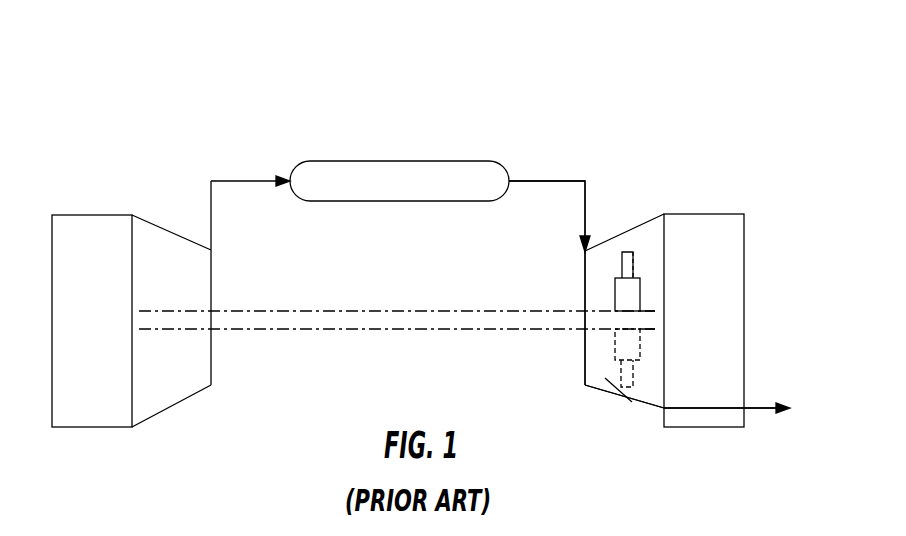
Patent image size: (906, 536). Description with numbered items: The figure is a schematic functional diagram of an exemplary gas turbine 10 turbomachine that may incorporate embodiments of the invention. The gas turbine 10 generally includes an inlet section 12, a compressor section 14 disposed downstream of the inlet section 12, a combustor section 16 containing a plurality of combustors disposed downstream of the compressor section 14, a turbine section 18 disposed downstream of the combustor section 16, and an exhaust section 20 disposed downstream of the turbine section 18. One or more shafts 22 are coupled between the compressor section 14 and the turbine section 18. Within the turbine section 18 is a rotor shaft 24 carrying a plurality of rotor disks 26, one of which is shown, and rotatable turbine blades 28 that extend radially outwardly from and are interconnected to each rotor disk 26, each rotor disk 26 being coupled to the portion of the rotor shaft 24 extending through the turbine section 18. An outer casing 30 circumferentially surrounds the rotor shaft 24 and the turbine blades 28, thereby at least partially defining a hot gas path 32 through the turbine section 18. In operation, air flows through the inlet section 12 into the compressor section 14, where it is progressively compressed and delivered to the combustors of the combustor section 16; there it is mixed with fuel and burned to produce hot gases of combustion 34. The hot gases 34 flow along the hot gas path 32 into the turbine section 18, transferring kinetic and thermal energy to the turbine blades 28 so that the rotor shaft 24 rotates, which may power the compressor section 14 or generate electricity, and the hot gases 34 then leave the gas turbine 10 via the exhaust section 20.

The gas turbine 10 is at (258, 88).
The inlet section 12 is at (72, 215).
The compressor section 14 is at (165, 228).
The combustor section 16 is at (452, 161).
The turbine section 18 is at (651, 214).
The exhaust section 20 is at (722, 214).
The shaft 22 is at (357, 329).
The rotor shaft 24 is at (654, 310).
The rotor disk 26 is at (613, 300).
The turbine blade 28 is at (618, 252).
The outer casing 30 is at (643, 418).
The hot gas path 32 is at (623, 388).
The hot gases of combustion 34 is at (567, 187).